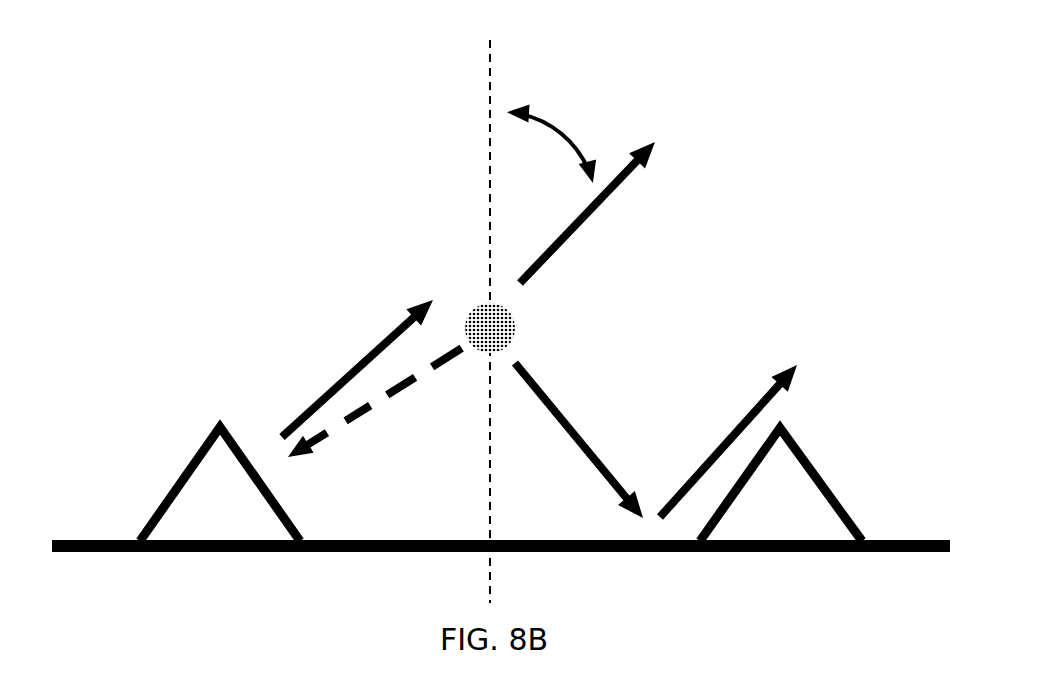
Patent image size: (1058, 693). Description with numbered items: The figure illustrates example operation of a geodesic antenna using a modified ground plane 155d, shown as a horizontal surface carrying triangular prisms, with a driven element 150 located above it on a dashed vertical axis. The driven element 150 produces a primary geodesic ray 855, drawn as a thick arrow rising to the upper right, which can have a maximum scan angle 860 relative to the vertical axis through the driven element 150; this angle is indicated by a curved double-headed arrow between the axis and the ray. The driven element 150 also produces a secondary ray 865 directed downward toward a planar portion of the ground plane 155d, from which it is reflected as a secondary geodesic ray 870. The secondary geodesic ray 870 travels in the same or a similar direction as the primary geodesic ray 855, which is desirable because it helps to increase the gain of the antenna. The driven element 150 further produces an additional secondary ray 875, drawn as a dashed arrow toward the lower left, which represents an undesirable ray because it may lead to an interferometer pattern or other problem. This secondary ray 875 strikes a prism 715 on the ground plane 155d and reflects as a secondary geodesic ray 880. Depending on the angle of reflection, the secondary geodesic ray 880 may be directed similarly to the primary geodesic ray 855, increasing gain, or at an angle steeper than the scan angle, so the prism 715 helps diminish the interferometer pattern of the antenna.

The ground plane 155d is at (327, 556).
The prism 715 is at (180, 462).
The driven element 150 is at (522, 335).
The primary geodesic ray 855 is at (603, 217).
The maximum scan angle 860 is at (570, 127).
The secondary ray 865 is at (583, 429).
The secondary geodesic ray 870 is at (747, 402).
The secondary geodesic ray 880 is at (335, 375).
The additional secondary ray 875 is at (374, 414).